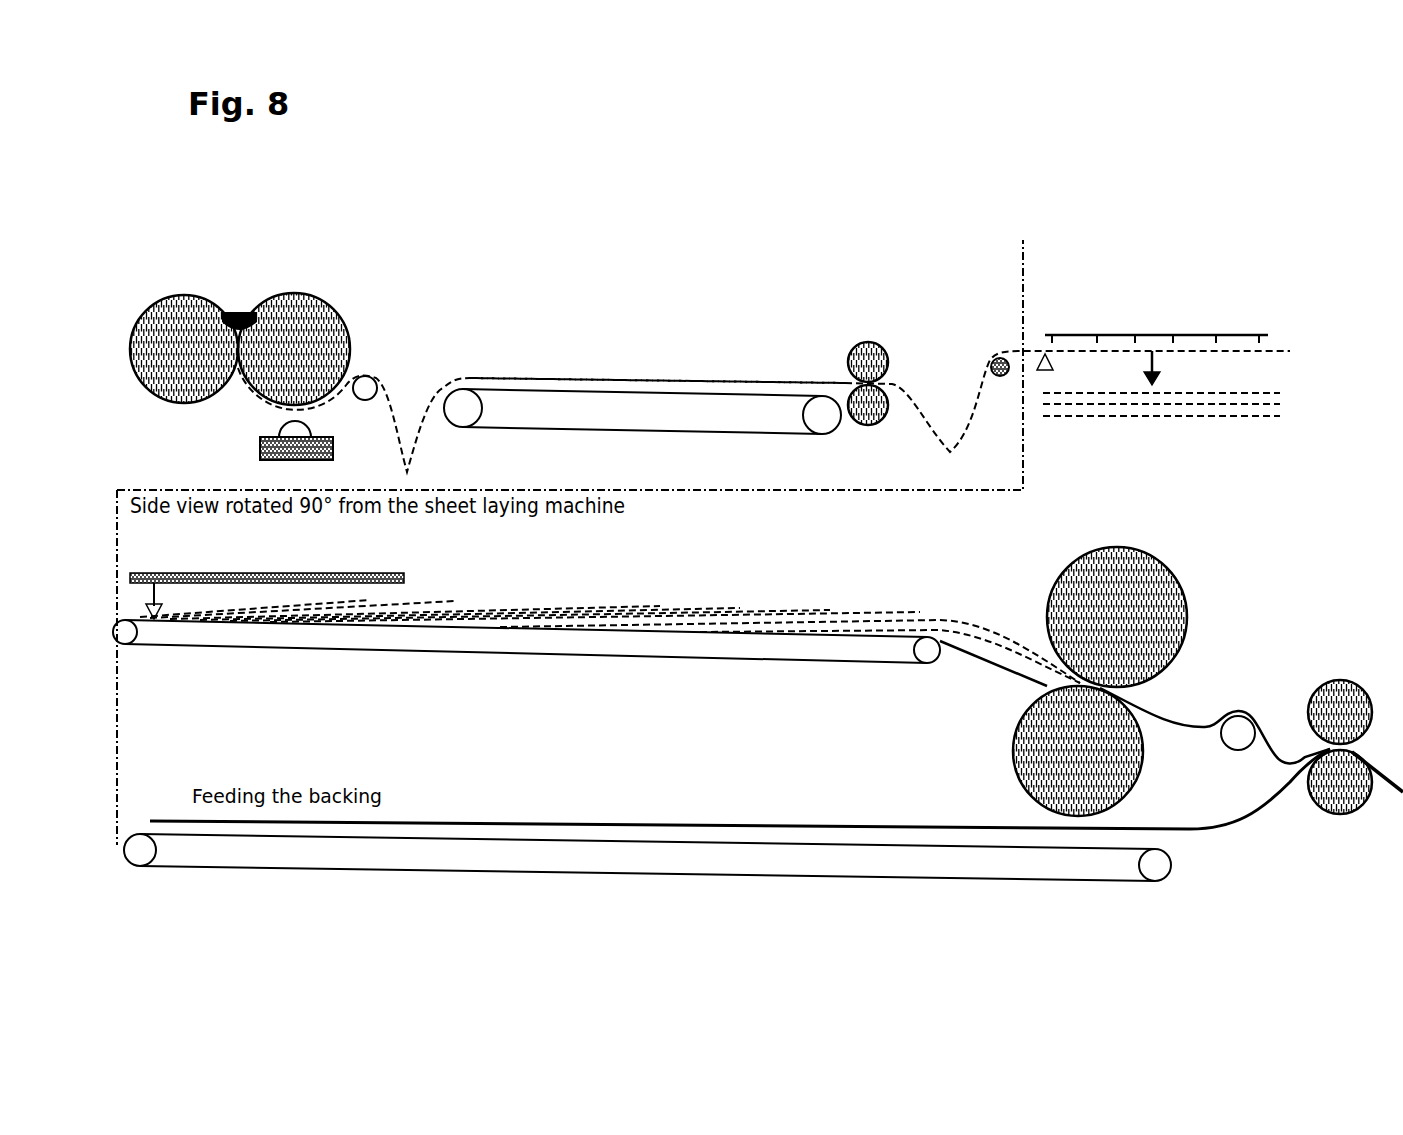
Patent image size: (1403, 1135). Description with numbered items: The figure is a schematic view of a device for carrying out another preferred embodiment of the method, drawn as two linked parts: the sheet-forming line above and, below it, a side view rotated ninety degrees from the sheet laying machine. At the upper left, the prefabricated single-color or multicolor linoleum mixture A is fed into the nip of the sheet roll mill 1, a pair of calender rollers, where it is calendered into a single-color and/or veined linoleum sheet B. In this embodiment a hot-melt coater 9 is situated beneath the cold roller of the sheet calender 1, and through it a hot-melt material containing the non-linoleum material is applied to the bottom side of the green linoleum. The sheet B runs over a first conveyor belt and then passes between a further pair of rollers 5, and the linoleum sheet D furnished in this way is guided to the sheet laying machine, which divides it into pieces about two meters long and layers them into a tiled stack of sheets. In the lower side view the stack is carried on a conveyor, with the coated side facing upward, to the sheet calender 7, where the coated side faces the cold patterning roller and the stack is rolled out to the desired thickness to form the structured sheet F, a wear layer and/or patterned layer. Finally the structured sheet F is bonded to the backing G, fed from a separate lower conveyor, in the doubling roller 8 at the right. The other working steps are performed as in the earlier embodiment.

The sheet roll mill 1 is at (240, 340).
The pair of rollers 5 is at (868, 367).
The sheet calender 7 is at (1108, 681).
The doubling roller 8 is at (1355, 735).
The hot-melt coater 9 is at (275, 443).
The linoleum mixture A is at (239, 309).
The linoleum sheet B is at (657, 368).
The furnished linoleum sheet D is at (1067, 401).
The structured sheet F is at (1215, 725).
The backing G is at (740, 789).